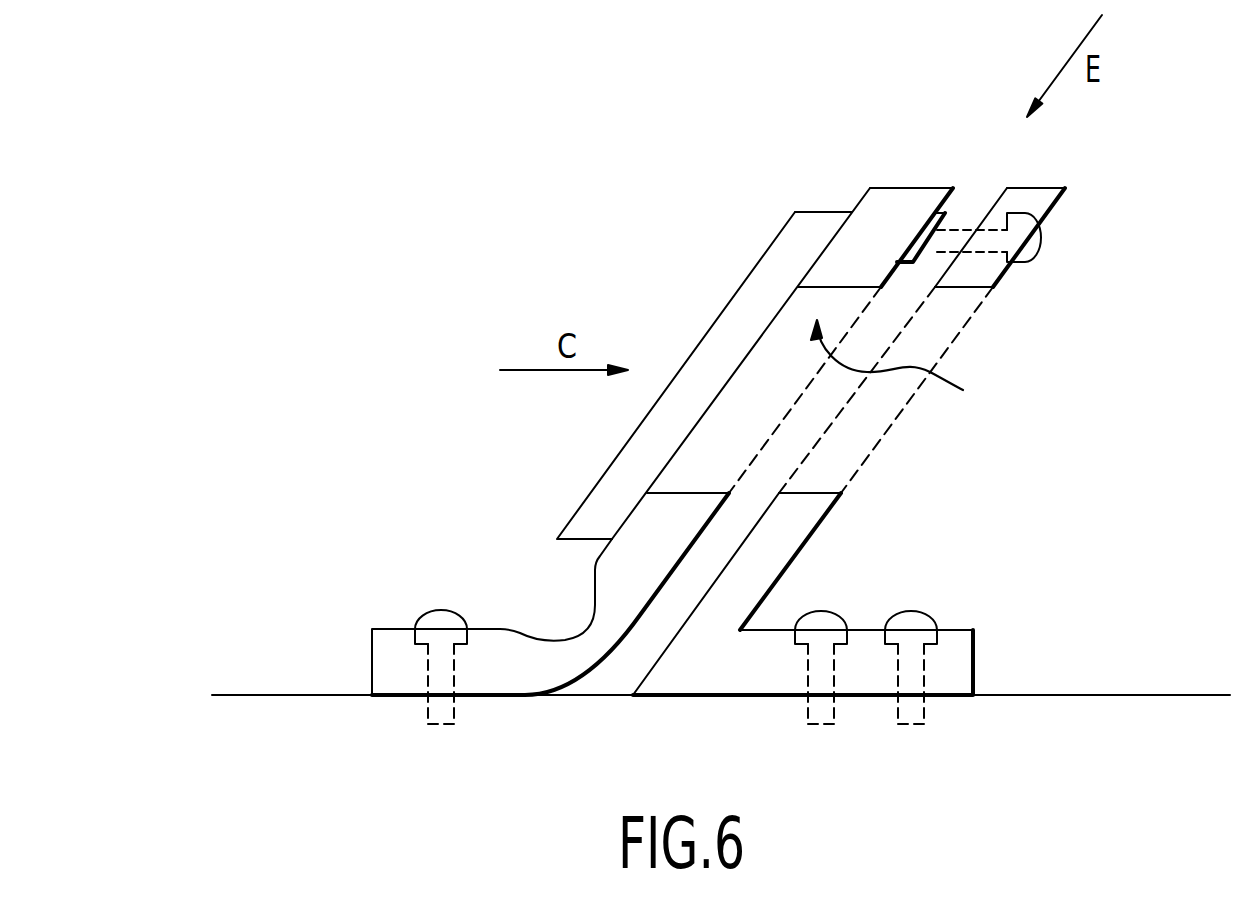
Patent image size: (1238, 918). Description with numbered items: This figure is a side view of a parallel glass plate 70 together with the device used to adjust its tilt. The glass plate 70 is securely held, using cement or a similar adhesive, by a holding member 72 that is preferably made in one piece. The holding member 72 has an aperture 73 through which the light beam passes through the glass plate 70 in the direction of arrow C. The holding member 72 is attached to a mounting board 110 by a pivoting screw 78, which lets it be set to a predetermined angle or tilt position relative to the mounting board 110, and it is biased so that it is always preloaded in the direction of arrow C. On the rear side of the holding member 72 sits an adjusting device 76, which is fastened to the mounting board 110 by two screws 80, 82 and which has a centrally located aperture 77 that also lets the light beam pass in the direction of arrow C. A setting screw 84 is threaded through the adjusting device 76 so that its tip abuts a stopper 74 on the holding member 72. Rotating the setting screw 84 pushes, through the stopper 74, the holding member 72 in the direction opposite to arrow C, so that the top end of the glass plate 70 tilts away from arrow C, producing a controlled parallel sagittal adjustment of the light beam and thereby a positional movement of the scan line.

The glass plate 70 is at (777, 237).
The holding member 72 is at (913, 186).
The aperture 73 is at (907, 377).
The stopper 74 is at (946, 216).
The adjusting device 76 is at (823, 513).
The aperture 77 is at (973, 332).
The pivoting screw 78 is at (441, 611).
The screw 80 is at (822, 611).
The screw 82 is at (912, 611).
The setting screw 84 is at (1043, 242).
The mounting board 110 is at (310, 696).